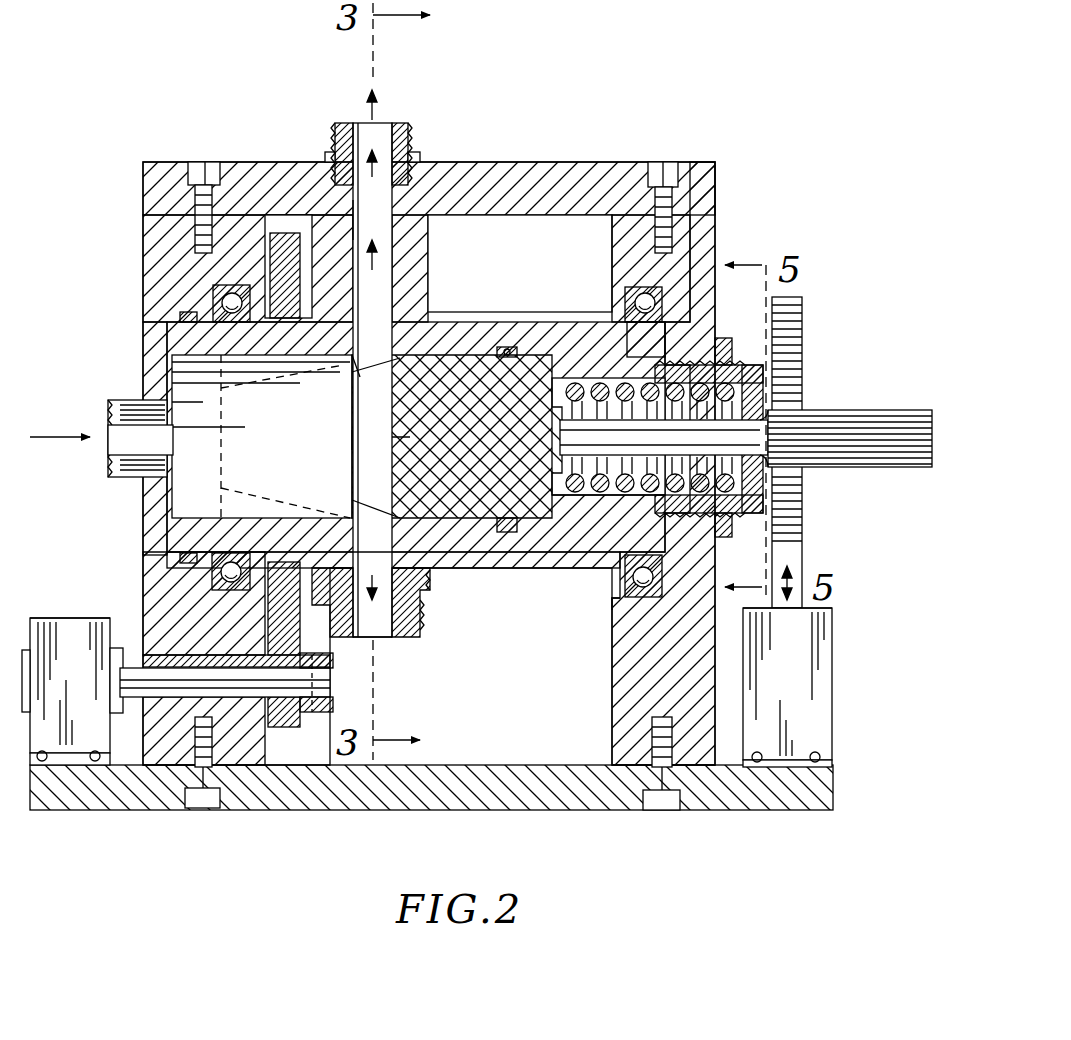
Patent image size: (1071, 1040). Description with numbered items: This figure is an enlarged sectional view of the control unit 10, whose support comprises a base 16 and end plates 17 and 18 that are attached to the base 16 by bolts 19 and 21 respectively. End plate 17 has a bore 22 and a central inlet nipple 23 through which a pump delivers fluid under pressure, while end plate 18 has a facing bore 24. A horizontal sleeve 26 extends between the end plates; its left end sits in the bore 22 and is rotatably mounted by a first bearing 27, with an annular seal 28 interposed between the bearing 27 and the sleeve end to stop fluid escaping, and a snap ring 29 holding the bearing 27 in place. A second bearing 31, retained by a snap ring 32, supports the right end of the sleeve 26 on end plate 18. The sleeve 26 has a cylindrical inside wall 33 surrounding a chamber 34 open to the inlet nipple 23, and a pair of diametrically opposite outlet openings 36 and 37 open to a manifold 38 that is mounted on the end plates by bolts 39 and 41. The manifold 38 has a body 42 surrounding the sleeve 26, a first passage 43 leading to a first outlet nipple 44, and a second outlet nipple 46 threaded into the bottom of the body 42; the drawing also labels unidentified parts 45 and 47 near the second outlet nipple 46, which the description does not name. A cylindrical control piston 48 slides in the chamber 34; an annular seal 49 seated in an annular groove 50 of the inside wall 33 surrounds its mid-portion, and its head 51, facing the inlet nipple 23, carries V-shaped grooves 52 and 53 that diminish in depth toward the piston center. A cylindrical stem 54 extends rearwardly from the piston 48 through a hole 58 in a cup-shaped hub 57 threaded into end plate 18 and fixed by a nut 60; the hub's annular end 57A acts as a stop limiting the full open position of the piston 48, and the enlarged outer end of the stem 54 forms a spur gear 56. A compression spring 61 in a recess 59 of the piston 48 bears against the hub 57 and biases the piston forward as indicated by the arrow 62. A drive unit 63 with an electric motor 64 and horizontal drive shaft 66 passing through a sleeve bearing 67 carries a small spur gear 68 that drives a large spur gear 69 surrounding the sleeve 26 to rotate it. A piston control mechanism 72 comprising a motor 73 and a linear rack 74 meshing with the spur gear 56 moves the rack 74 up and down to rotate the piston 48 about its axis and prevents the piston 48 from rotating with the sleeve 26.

The control unit 10 is at (622, 126).
The base 16 is at (445, 812).
The end plate 17 is at (143, 233).
The end plate 18 is at (706, 222).
The bolt 19 is at (200, 811).
The bolt 21 is at (669, 812).
The bore 22 is at (182, 558).
The central inlet nipple 23 is at (120, 432).
The bore 24 is at (662, 306).
The sleeve 26 is at (447, 338).
The first bearing 27 is at (222, 298).
The annular seal 28 is at (183, 314).
The snap ring 29 is at (258, 588).
The second bearing 31 is at (640, 600).
The snap ring 32 is at (636, 580).
The cylindrical inside wall 33 is at (285, 372).
The chamber 34 is at (252, 466).
The outlet opening 36 is at (363, 378).
The outlet opening 37 is at (382, 546).
The manifold 38 is at (537, 156).
The bolt 39 is at (205, 165).
The bolt 41 is at (664, 168).
The body 42 is at (430, 256).
The first passage 43 is at (360, 207).
The first outlet nipple 44 is at (410, 135).
The lower nut 45 is at (396, 640).
The second outlet nipple 46 is at (407, 616).
The lock nut 47 is at (417, 588).
The control piston 48 is at (480, 447).
The annular seal 49 is at (507, 348).
The annular groove 50 is at (504, 346).
The head 51 is at (352, 442).
The V-shaped groove 52 is at (385, 370).
The V-shaped groove 53 is at (362, 506).
The cylindrical stem 54 is at (562, 440).
The spur gear 56 is at (852, 412).
The hub 57 is at (751, 368).
The annular end 57A is at (643, 352).
The hole 58 is at (736, 520).
The recess 59 is at (578, 378).
The nut 60 is at (723, 340).
The compression spring 61 is at (587, 497).
The arrow 62 is at (389, 456).
The drive unit 63 is at (50, 612).
The electric motor 64 is at (77, 618).
The drive shaft 66 is at (136, 668).
The sleeve bearing 67 is at (181, 656).
The small spur gear 68 is at (292, 720).
The large spur gear 69 is at (284, 258).
The piston control mechanism 72 is at (848, 606).
The motor 73 is at (818, 688).
The linear rack 74 is at (800, 320).